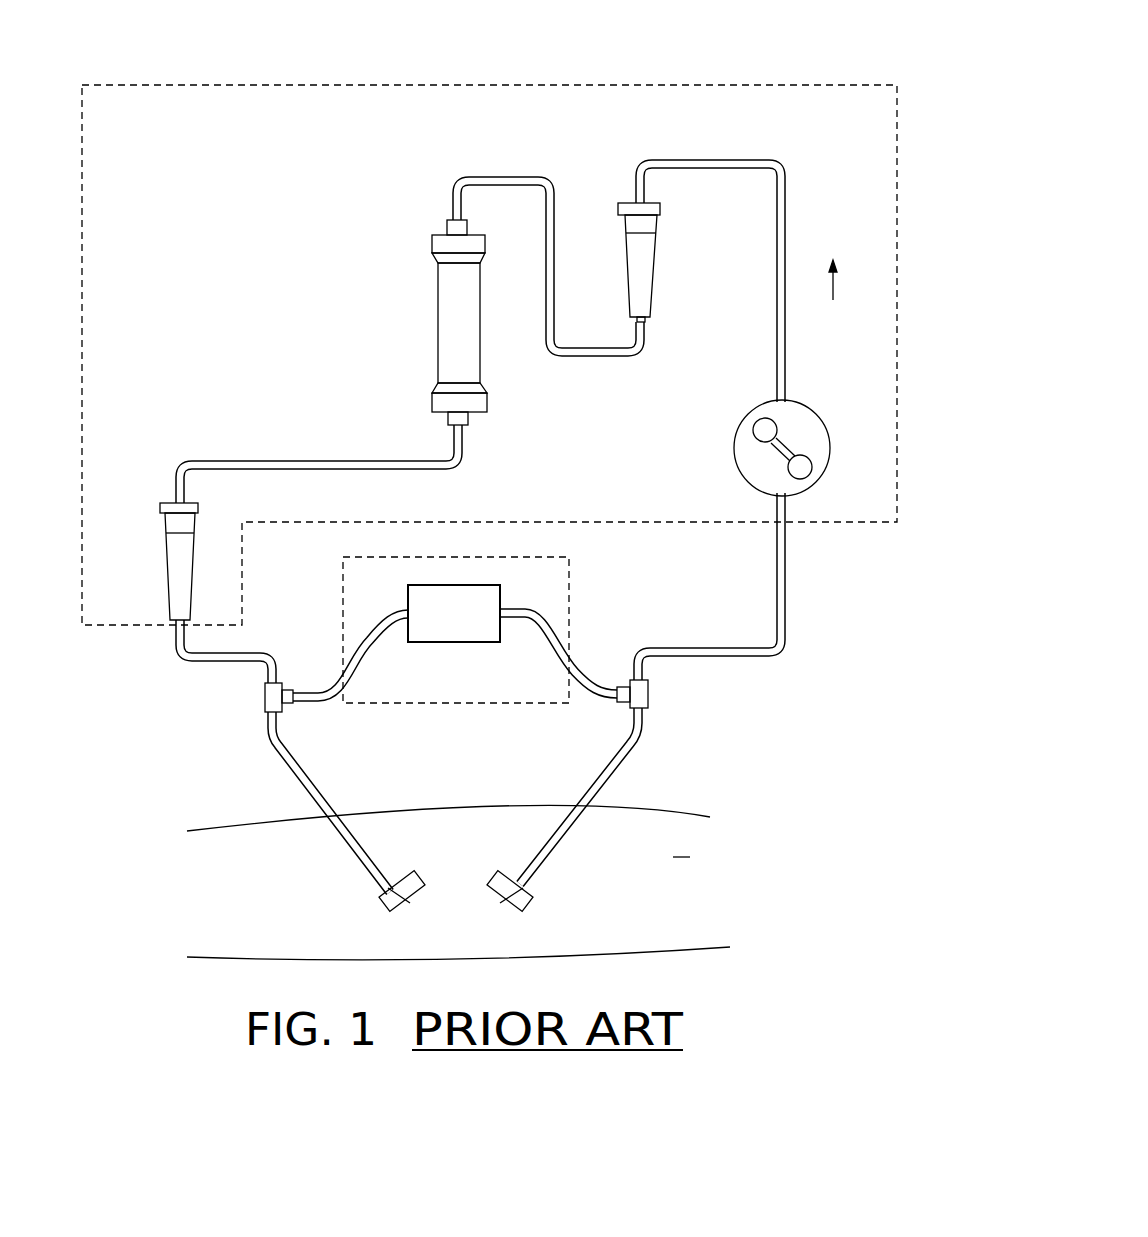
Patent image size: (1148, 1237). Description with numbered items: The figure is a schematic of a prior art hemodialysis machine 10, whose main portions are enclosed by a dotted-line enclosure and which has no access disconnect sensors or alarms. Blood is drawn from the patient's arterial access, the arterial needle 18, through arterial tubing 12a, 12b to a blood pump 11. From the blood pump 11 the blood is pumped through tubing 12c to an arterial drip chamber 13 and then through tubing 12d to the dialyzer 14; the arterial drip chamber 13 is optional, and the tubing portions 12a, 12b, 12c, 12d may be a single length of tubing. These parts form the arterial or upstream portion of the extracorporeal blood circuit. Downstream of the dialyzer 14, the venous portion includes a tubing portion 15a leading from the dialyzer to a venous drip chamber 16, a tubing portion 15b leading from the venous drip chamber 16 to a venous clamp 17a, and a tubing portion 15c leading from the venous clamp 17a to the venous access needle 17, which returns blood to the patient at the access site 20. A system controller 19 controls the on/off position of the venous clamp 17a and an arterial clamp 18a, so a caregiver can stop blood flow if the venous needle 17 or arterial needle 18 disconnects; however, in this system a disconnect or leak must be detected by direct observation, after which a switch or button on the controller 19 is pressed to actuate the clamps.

The hemodialysis machine 10 is at (892, 62).
The blood pump 11 is at (733, 449).
The arterial tubing 12a is at (623, 757).
The arterial tubing 12b is at (788, 582).
The tubing 12c is at (712, 160).
The tubing 12d is at (520, 177).
The arterial drip chamber 13 is at (660, 258).
The dialyzer 14 is at (432, 308).
The tubing portion 15a is at (313, 462).
The tubing portion 15b is at (237, 652).
The tubing portion 15c is at (320, 790).
The venous drip chamber 16 is at (165, 575).
The venous access needle 17 is at (385, 892).
The venous clamp 17a is at (265, 697).
The arterial needle 18 is at (525, 886).
The arterial clamp 18a is at (650, 695).
The system controller 19 is at (556, 578).
The patient access site 20 is at (178, 782).